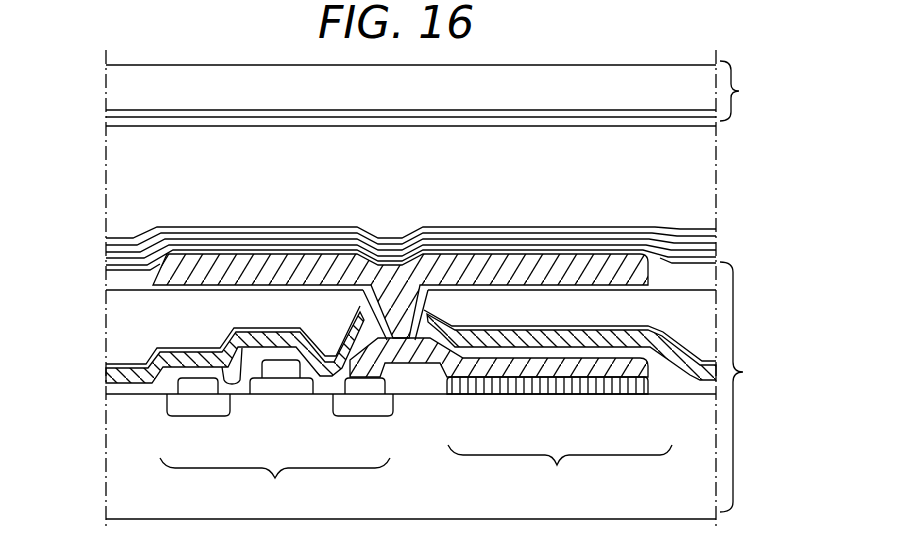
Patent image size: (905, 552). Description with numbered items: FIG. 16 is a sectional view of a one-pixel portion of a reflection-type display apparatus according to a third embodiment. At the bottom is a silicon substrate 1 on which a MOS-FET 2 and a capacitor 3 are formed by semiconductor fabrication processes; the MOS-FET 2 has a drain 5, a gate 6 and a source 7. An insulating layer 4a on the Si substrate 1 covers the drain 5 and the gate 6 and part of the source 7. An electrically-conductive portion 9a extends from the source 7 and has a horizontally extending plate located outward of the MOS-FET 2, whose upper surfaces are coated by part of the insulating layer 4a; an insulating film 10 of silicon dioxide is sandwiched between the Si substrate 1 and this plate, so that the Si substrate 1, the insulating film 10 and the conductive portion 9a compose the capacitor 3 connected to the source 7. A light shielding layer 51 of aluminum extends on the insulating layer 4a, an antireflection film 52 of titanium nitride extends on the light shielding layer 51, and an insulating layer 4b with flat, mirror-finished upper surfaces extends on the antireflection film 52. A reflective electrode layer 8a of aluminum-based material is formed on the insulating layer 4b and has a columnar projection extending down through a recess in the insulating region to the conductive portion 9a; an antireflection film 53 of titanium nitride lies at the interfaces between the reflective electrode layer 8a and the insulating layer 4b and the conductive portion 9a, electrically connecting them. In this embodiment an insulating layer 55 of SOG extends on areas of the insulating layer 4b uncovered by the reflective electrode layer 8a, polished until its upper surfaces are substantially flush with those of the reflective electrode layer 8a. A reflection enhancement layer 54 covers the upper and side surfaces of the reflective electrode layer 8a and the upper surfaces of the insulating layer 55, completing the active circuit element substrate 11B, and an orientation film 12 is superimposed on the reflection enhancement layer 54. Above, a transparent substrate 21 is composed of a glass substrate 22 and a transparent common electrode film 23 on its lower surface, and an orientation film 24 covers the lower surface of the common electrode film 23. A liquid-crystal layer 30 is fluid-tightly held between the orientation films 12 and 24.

The Si substrate 1 is at (125, 483).
The MOS-FET 2 is at (274, 479).
The capacitor 3 is at (557, 463).
The insulating layer 4a is at (130, 392).
The insulating layer 4b is at (112, 293).
The drain 5 is at (190, 407).
The gate 6 is at (276, 388).
The source 7 is at (356, 407).
The reflective electrode layer 8a is at (140, 243).
The electrically-conductive portion 9a is at (443, 363).
The insulating film 10 is at (587, 388).
The active circuit element substrate 11B is at (746, 372).
The orientation film 12 is at (155, 228).
The transparent substrate 21 is at (742, 91).
The glass substrate 22 is at (112, 78).
The common electrode film 23 is at (116, 114).
The orientation film 24 is at (683, 125).
The liquid-crystal layer 30 is at (700, 189).
The light shielding layer 51 is at (111, 378).
The antireflection film 52 is at (107, 357).
The antireflection film 53 is at (630, 292).
The reflection enhancement layer 54 is at (555, 232).
The insulating layer 55 is at (108, 268).